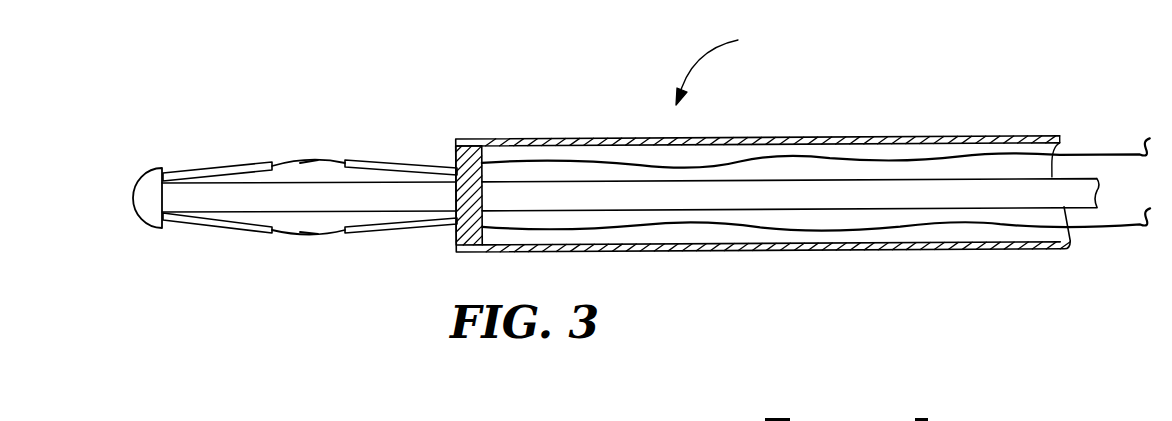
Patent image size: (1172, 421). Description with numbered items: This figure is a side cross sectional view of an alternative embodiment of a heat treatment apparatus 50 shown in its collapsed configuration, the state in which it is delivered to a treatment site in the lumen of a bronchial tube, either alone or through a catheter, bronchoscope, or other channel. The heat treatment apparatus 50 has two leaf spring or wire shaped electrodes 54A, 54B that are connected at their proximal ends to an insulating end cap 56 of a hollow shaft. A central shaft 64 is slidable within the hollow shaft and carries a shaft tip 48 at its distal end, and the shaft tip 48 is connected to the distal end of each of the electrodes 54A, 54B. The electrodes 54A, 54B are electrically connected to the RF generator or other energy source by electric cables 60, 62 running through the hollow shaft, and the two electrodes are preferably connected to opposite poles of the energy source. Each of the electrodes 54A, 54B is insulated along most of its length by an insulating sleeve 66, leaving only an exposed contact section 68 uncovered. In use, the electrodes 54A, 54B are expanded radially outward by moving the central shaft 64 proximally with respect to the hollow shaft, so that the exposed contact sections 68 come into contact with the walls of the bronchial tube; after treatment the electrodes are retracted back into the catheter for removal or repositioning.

The shaft tip 48 is at (140, 200).
The heat treatment apparatus 50 is at (722, 69).
The electrode 54A is at (318, 237).
The electrode 54B is at (298, 158).
The insulating end cap 56 is at (472, 160).
The electric cable 60 is at (1012, 228).
The electric cable 62 is at (1024, 165).
The central shaft 64 is at (830, 192).
The insulating sleeve 66 is at (212, 167).
The exposed contact section 68 is at (333, 162).